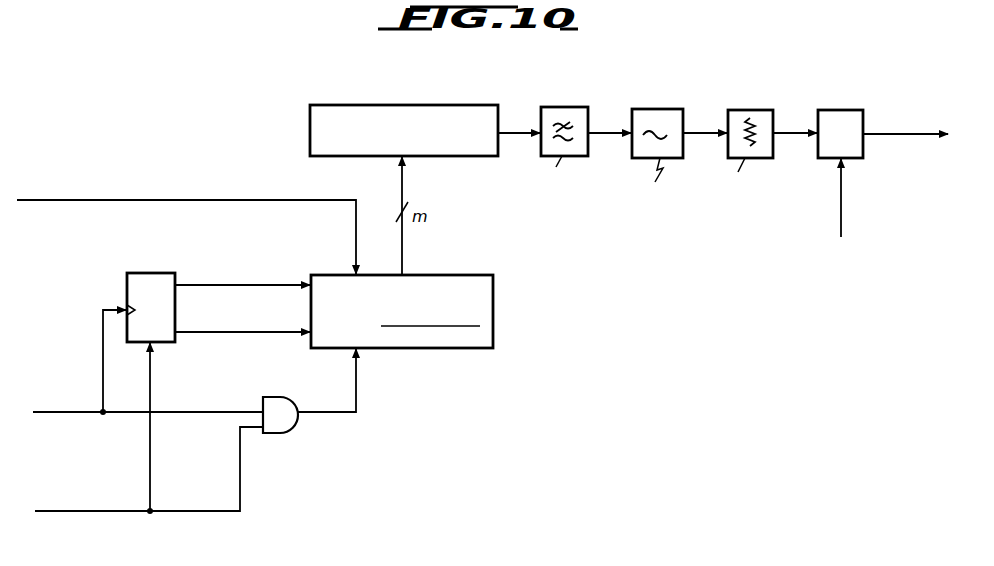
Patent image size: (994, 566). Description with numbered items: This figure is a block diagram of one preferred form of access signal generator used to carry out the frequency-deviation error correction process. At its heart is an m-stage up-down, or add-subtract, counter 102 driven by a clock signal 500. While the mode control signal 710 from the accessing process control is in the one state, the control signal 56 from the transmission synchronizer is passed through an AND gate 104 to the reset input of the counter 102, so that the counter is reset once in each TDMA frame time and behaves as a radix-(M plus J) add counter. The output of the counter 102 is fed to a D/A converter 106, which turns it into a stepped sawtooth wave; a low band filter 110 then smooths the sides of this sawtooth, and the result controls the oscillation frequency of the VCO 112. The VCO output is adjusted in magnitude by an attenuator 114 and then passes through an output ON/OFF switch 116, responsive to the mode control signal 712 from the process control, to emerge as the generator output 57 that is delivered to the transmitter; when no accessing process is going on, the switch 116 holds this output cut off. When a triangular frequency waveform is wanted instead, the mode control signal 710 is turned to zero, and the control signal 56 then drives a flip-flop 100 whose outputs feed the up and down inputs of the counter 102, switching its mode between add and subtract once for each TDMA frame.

The D/A converter 106 is at (424, 93).
The low band filter 110 is at (576, 95).
The VCO (voltage control oscillator) 112 is at (662, 109).
The attenuator 114 is at (756, 110).
The output ON/OFF switch 116 is at (842, 110).
The output signal 57 is at (898, 134).
The mode control signal 712 is at (841, 206).
The clock signal 500 is at (200, 183).
The flip-flop 100 is at (172, 256).
The up-down (add-subtract) counter 102 is at (493, 310).
The control signal 56 is at (65, 412).
The AND gate 104 is at (278, 435).
The mode control signal 710 is at (60, 513).